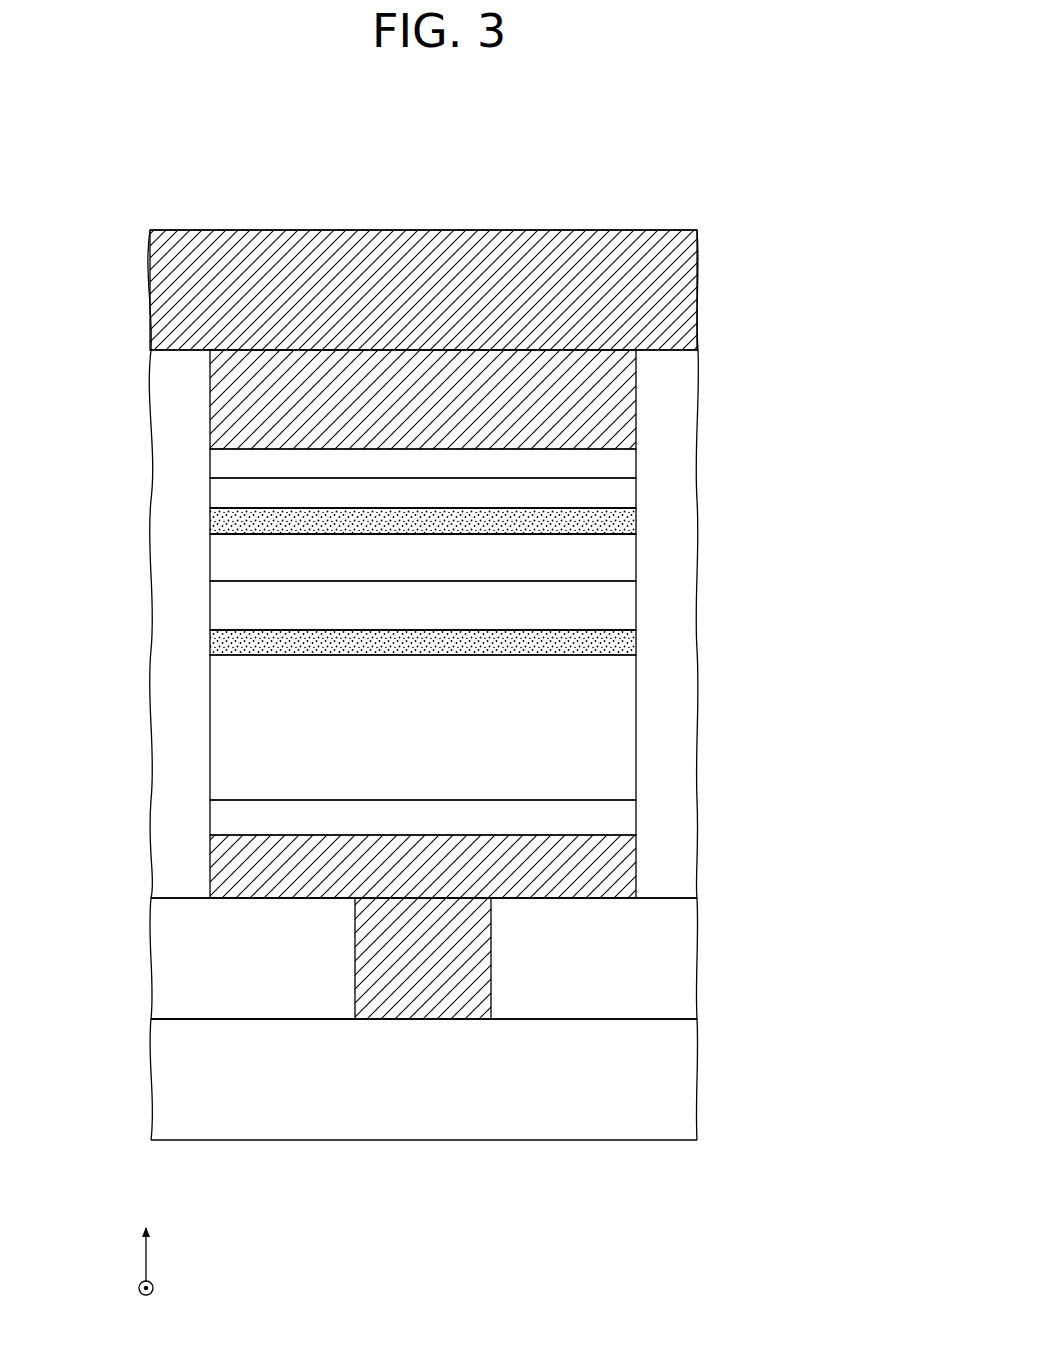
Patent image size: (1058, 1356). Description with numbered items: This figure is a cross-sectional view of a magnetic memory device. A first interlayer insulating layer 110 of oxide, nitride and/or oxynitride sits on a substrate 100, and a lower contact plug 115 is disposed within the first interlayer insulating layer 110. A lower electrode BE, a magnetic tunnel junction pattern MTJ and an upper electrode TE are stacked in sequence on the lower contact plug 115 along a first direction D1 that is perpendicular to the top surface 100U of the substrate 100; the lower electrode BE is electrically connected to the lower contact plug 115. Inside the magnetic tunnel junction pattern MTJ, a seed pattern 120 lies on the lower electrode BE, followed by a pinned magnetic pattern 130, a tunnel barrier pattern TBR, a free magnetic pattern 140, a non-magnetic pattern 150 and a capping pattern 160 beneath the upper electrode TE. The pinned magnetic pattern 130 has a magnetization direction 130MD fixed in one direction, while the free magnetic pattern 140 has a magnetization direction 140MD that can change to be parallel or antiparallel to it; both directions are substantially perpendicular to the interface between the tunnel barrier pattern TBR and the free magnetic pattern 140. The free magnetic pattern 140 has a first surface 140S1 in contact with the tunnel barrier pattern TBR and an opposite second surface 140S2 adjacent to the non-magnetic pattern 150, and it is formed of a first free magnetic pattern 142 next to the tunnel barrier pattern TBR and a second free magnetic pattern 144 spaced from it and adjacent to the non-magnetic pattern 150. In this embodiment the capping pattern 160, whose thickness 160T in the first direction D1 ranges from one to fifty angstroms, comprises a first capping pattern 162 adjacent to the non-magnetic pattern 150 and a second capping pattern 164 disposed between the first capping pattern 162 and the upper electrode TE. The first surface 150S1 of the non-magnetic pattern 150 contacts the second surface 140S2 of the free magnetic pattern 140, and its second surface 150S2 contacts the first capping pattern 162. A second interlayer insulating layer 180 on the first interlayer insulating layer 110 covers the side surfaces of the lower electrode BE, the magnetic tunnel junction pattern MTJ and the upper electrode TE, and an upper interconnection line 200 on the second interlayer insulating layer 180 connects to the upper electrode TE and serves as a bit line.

The substrate 100 is at (683, 1080).
The top surface of the substrate 100U is at (204, 1018).
The first interlayer insulating layer 110 is at (683, 931).
The lower contact plug 115 is at (490, 963).
The seed pattern 120 is at (499, 817).
The lower electrode BE is at (622, 867).
The pinned magnetic pattern 130 is at (622, 723).
The magnetization direction of the pinned magnetic pattern 130MD is at (423, 677).
The tunnel barrier pattern TBR is at (622, 643).
The free magnetic pattern 140 is at (533, 582).
The first free magnetic pattern 142 is at (622, 608).
The second free magnetic pattern 144 is at (622, 560).
The magnetization direction of the free magnetic pattern 140MD is at (423, 553).
The first surface of the free magnetic pattern 140S1 is at (283, 636).
The second surface of the free magnetic pattern 140S2 is at (273, 527).
The non-magnetic pattern 150 is at (622, 521).
The first surface of the non-magnetic pattern 150S1 is at (332, 545).
The second surface of the non-magnetic pattern 150S2 is at (297, 500).
The capping pattern 160 is at (533, 475).
The thickness of the capping pattern 160T is at (210, 508).
The first capping pattern 162 is at (622, 494).
The second capping pattern 164 is at (622, 462).
The upper electrode TE is at (627, 402).
The second interlayer insulating layer 180 is at (683, 368).
The upper interconnection line 200 is at (683, 283).
The magnetic tunnel junction pattern MTJ is at (563, 640).
The first direction D1 is at (149, 1242).